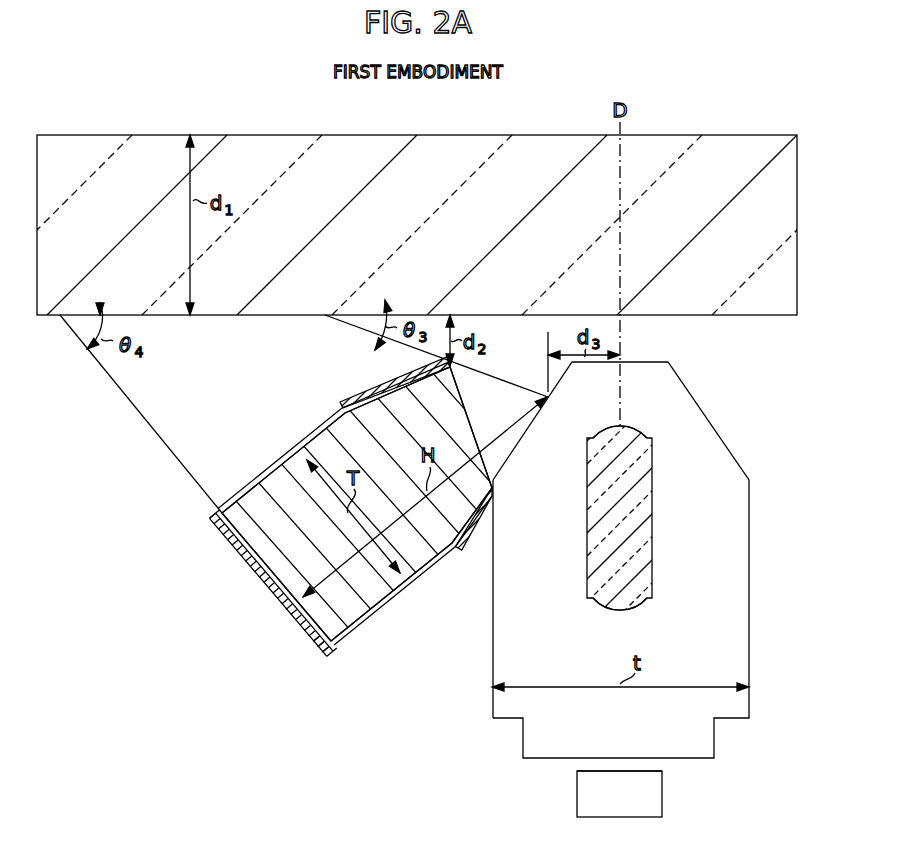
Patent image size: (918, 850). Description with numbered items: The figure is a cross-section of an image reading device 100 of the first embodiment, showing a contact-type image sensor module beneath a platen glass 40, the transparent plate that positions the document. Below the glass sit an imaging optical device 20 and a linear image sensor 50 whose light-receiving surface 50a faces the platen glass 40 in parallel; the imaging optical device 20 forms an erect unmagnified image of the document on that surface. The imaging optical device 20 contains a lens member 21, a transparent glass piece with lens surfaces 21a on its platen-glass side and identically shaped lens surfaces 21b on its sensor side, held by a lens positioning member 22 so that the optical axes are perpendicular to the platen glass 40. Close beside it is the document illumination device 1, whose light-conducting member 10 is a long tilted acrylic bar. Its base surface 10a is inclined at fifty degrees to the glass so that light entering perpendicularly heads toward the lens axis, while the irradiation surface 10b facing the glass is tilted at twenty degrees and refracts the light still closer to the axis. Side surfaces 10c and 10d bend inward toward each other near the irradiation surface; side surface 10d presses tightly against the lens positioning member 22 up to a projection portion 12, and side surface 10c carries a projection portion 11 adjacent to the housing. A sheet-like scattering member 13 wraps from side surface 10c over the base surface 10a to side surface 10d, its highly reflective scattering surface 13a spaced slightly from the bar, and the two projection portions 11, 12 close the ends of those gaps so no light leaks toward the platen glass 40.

The image reading device 100 is at (404, 120).
The platen glass 40 is at (275, 153).
The document illumination device 1 is at (280, 632).
The light-conducting member 10 is at (268, 537).
The base surface 10a is at (282, 592).
The irradiation surface 10b is at (512, 383).
The side surface 10c is at (325, 425).
The side surface 10d is at (390, 601).
The projection portion 11 is at (440, 371).
The projection portion 12 is at (484, 517).
The scattering member 13 is at (338, 655).
The scattering surface 13a is at (318, 617).
The imaging optical device 20 is at (482, 730).
The lens member 21 is at (590, 522).
The lens surface 21a is at (637, 433).
The lens surface 21b is at (610, 612).
The lens positioning member 22 is at (490, 659).
The linear image sensor 50 is at (590, 797).
The light-receiving surface 50a is at (660, 766).